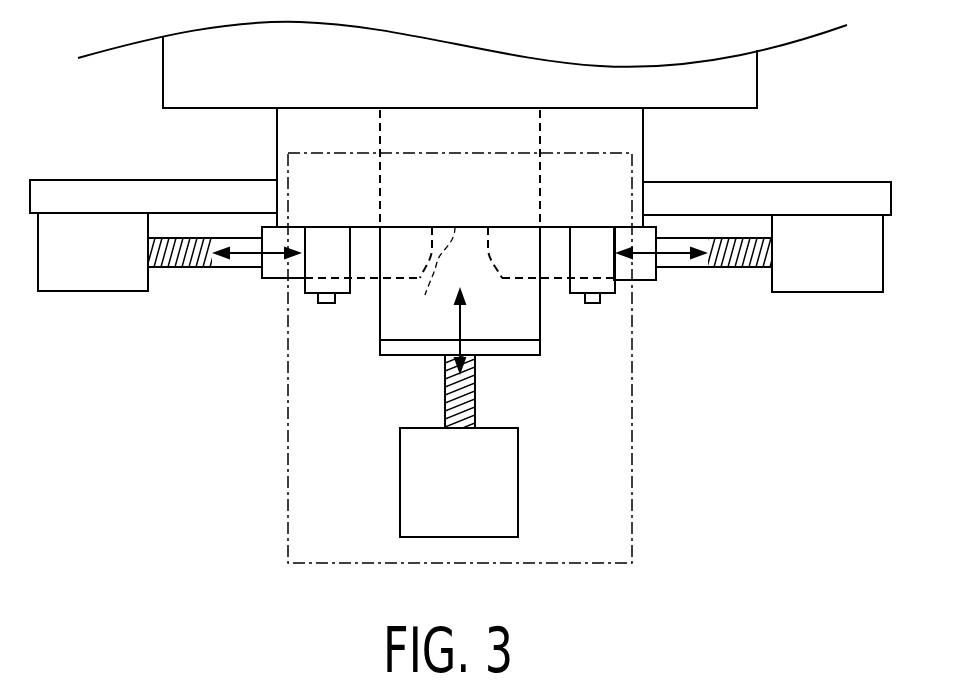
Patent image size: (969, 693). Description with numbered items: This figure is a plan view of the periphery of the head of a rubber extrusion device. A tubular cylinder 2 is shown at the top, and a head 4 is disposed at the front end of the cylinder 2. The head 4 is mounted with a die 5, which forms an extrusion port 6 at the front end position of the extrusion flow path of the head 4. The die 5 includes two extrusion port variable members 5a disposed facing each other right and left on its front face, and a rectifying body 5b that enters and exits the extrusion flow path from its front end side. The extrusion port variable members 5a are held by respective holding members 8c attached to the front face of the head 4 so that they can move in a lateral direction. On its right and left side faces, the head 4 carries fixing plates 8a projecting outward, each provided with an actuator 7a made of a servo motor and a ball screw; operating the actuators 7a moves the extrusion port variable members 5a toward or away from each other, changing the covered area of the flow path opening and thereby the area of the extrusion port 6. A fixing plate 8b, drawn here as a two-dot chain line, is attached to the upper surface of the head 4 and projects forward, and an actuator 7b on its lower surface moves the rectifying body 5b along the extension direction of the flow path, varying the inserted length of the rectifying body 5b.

The cylinder 2 is at (178, 78).
The head 4 is at (303, 133).
The die 5 is at (557, 357).
The extrusion port variable member 5a is at (275, 275).
The rectifying body 5b is at (513, 331).
The extrusion port 6 is at (460, 299).
The actuator 7a is at (193, 302).
The actuator 7b is at (383, 412).
The fixing plate 8a is at (88, 188).
The fixing plate 8b is at (612, 458).
The holding member 8c is at (338, 283).